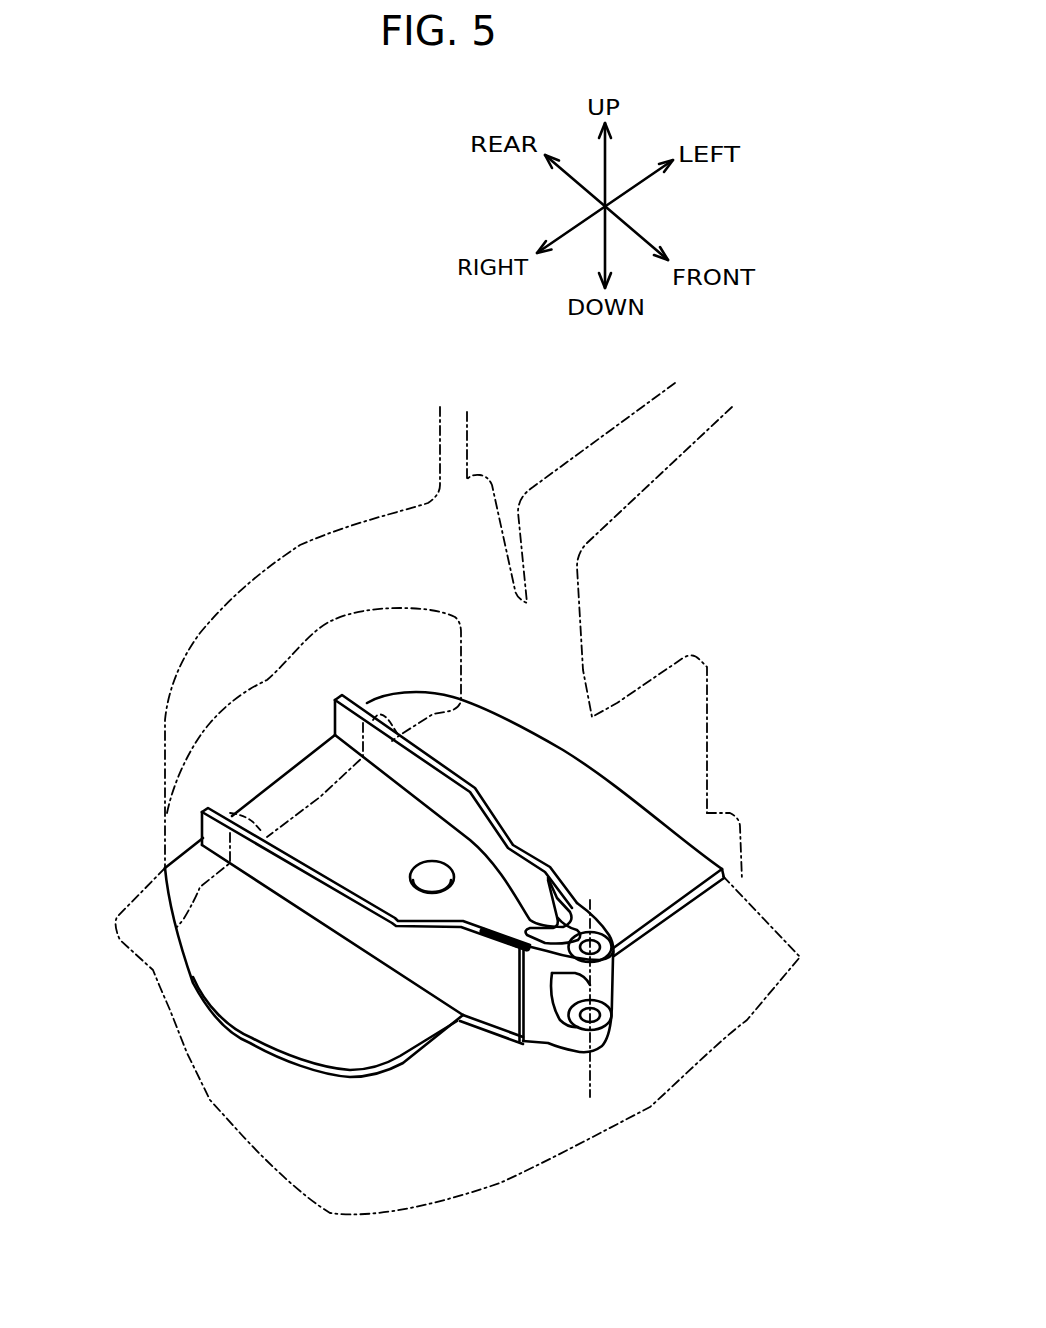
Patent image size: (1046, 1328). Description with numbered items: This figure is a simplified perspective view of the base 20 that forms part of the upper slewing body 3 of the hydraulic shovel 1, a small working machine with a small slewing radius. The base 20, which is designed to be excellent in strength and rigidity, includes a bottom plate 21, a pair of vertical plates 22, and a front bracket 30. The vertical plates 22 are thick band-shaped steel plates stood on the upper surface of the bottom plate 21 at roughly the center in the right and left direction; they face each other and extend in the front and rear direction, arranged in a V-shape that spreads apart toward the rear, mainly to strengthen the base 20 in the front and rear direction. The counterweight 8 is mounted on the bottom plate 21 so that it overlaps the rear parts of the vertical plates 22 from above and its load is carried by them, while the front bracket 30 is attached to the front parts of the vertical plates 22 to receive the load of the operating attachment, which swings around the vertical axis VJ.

The hydraulic shovel 1 is at (272, 462).
The upper slewing body 3 is at (262, 658).
The counterweight 8 is at (257, 740).
The base 20 is at (419, 845).
The bottom plate 21 is at (600, 803).
The vertical plates 22 is at (493, 817).
The front bracket 30 is at (545, 1027).
The vertical axis VJ is at (590, 1077).